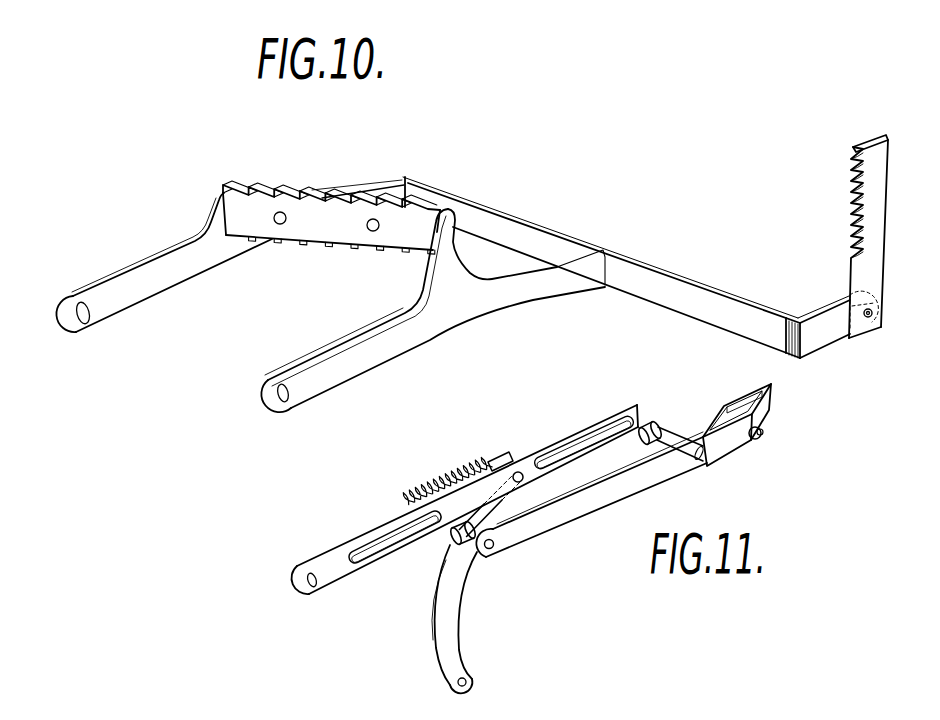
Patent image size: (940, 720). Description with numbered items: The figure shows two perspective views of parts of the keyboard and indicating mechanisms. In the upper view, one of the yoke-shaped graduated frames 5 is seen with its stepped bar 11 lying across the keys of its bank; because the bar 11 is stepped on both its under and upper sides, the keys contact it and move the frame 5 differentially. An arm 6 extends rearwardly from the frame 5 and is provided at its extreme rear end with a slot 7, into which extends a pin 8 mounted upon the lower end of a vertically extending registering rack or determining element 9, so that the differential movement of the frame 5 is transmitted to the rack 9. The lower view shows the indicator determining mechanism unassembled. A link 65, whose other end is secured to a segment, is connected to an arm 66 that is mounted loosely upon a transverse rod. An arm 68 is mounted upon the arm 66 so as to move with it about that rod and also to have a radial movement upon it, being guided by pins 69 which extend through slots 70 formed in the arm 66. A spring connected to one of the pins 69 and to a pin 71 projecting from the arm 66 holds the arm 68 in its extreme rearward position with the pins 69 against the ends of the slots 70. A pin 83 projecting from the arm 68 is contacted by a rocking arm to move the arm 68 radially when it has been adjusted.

In FIG. 10, the stepped bar 11 is at (245, 217).
In FIG. 10, the graduated frame 5 is at (502, 227).
In FIG. 10, the arm 6 is at (820, 324).
In FIG. 10, the registering rack 9 is at (878, 218).
In FIG. 10, the slot 7 is at (847, 318).
In FIG. 10, the pin 8 is at (873, 312).
In FIG. 11, the arm 66 is at (345, 548).
In FIG. 11, the slot 70 is at (368, 548).
In FIG. 11, the pin 71 is at (494, 459).
In FIG. 11, the pin 69 is at (660, 428).
In FIG. 11, the arm 68 is at (627, 480).
In FIG. 11, the pin 83 is at (759, 438).
In FIG. 11, the link 65 is at (440, 610).